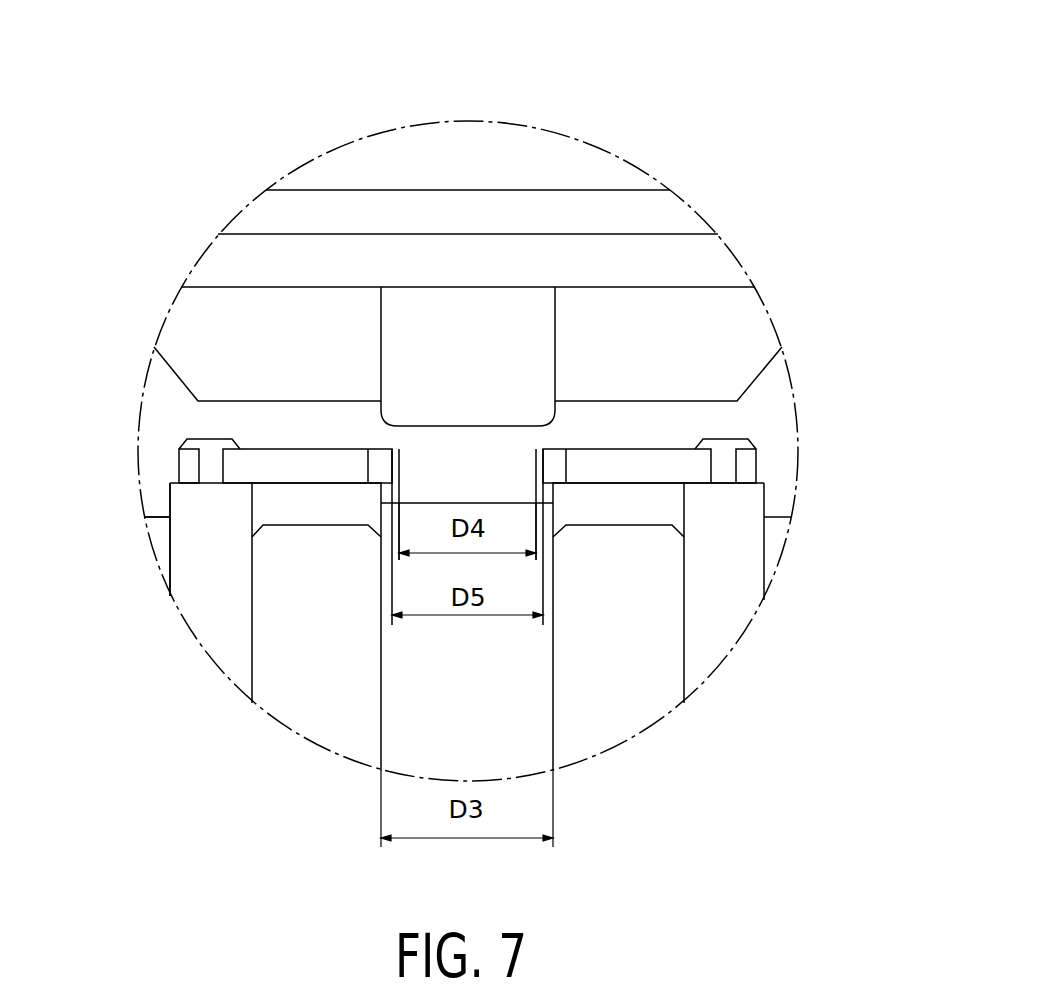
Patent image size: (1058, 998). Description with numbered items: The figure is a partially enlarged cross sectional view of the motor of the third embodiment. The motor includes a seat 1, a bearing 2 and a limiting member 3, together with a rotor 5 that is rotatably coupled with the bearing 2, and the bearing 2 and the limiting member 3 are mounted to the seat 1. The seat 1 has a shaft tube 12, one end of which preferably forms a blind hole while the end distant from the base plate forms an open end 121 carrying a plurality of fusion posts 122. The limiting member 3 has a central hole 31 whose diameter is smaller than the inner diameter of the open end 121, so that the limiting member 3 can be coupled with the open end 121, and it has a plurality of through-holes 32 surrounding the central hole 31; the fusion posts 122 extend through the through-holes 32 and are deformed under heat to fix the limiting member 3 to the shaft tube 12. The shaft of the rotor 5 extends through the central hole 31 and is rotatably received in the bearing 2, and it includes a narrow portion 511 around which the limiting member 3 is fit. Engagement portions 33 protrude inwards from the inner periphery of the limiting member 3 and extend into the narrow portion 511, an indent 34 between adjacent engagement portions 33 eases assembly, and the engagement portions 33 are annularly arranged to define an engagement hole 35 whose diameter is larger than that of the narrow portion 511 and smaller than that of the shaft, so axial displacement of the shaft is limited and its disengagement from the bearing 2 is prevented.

The seat 1 is at (197, 620).
The bearing 2 is at (618, 690).
The limiting member 3 is at (642, 460).
The rotor 5 is at (312, 207).
The shaft tube 12 is at (723, 580).
The central hole 31 is at (370, 467).
The through-holes 32 is at (185, 458).
The engagement portion 33 is at (383, 467).
The indent 34 is at (370, 457).
The engagement hole 35 is at (538, 453).
The open end 121 is at (763, 477).
The fusion posts 122 is at (720, 460).
The narrow portion 511 is at (467, 457).